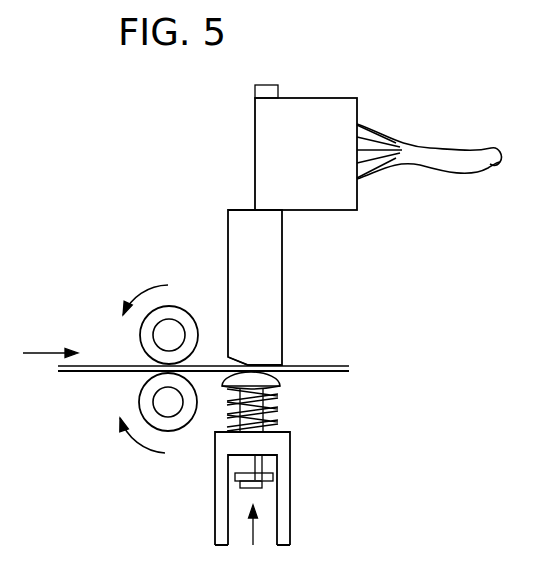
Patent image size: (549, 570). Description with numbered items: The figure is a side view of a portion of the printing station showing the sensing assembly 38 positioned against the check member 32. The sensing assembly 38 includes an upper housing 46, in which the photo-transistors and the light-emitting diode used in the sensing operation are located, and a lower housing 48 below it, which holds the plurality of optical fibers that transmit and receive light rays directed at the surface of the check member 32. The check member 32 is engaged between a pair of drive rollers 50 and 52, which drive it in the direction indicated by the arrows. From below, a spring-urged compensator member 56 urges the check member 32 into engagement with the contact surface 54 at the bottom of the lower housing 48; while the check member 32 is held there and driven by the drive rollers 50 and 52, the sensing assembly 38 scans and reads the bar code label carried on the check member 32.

The check member 32 is at (337, 364).
The sensing assembly 38 is at (238, 172).
The upper housing 46 is at (305, 110).
The lower housing 48 is at (275, 254).
The drive roller 50 is at (190, 318).
The drive roller 52 is at (143, 398).
The contact surface 54 is at (248, 363).
The spring-urged compensator member 56 is at (278, 378).